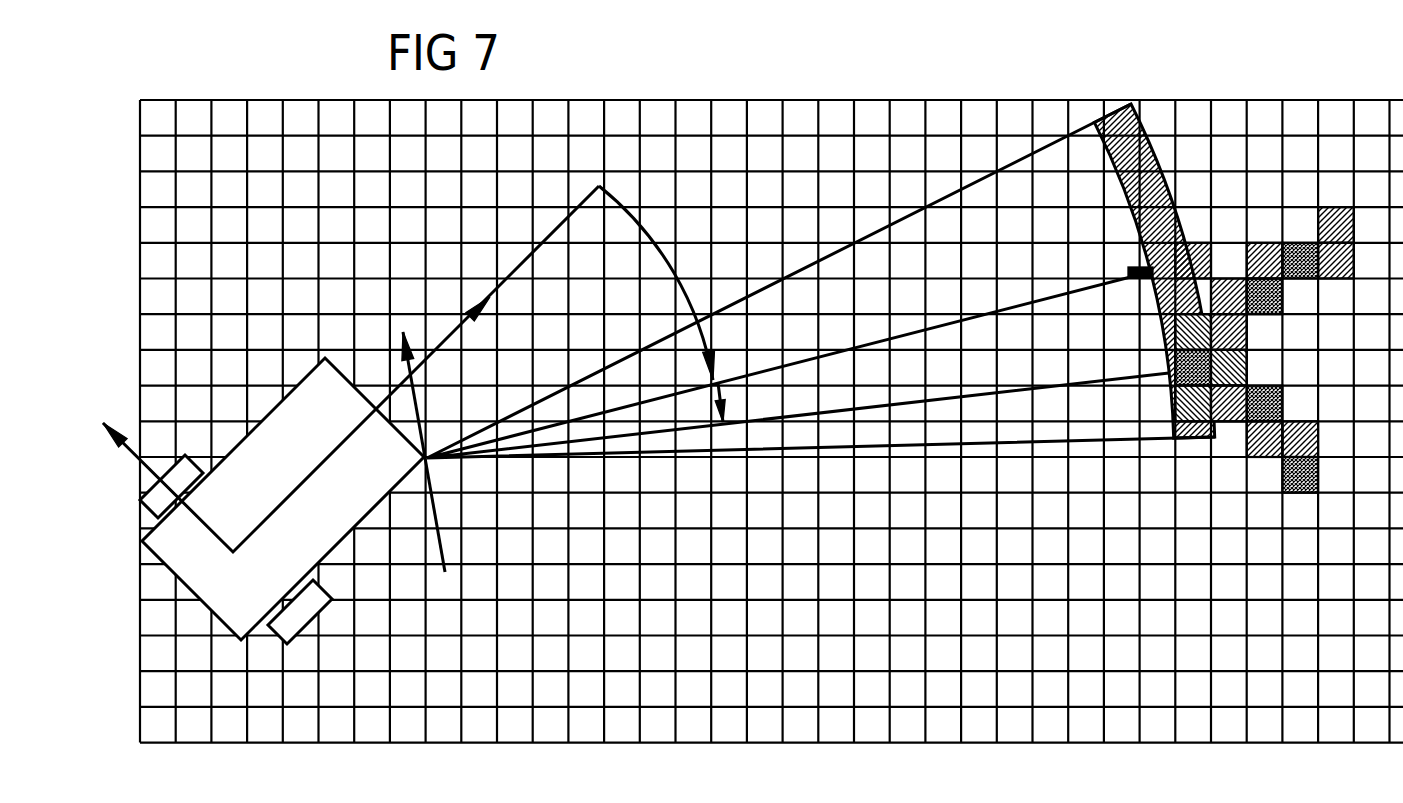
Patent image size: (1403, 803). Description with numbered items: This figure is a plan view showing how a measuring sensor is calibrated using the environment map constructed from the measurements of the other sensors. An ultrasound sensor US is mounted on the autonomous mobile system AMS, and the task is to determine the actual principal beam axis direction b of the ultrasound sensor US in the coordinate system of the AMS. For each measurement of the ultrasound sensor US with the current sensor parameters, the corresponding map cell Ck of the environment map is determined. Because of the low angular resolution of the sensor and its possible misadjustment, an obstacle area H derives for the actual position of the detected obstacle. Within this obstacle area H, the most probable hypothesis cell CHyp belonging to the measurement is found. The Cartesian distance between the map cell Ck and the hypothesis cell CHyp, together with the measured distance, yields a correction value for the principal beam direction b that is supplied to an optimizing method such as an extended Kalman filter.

The autonomous mobile system AMS is at (351, 415).
The ultrasound sensor US is at (430, 470).
The principal beam axis direction b is at (938, 399).
The obstacle area H is at (1158, 143).
The map cell Ck is at (1193, 252).
The most probable hypothesis cell CHyp is at (1168, 376).